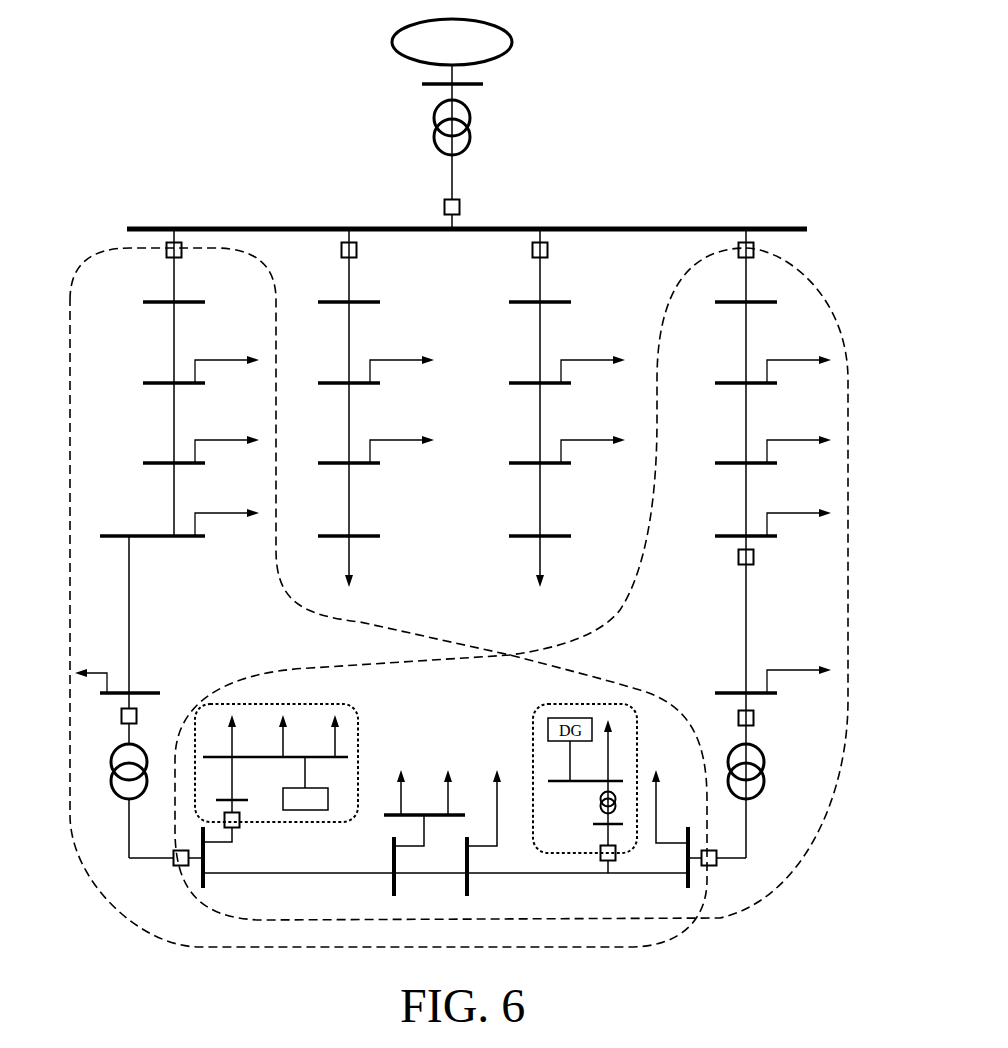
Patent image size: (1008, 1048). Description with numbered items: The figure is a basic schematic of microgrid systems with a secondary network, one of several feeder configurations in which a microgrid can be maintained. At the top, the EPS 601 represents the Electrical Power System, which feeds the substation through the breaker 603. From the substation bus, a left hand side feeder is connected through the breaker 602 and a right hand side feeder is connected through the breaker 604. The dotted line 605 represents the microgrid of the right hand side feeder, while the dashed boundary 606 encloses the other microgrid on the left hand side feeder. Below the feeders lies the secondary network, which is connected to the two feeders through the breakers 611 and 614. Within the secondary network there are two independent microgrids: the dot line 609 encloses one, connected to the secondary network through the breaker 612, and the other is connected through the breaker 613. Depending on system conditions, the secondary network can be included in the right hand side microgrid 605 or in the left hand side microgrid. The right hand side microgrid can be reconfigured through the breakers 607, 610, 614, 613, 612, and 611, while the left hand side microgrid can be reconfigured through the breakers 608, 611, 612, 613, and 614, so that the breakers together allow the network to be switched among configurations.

The EPS 601 is at (512, 33).
The breaker 602 is at (178, 242).
The breaker 603 is at (462, 200).
The breaker 604 is at (748, 242).
The microgrid 605 is at (687, 269).
The protection zone 606 is at (367, 623).
The breaker 607 is at (737, 560).
The breaker 608 is at (138, 712).
The dot line 609 is at (360, 729).
The breaker 610 is at (757, 718).
The breaker 611 is at (173, 865).
The breaker 612 is at (238, 828).
The breaker 613 is at (603, 860).
The breaker 614 is at (717, 862).